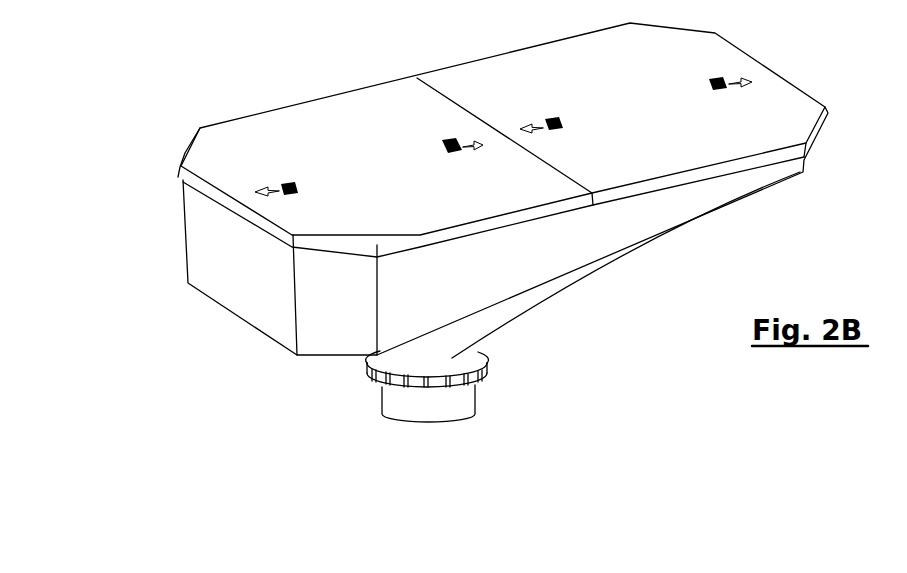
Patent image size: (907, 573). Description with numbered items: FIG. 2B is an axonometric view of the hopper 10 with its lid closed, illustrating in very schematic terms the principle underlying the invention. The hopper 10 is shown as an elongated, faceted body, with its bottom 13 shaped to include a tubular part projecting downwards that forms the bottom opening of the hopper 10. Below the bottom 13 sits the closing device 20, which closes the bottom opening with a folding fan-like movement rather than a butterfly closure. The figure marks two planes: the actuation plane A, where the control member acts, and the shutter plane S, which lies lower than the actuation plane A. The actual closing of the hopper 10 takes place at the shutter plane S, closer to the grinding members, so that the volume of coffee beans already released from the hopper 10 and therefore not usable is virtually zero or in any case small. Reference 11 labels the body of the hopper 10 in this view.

The hopper 10 is at (502, 216).
The plate body 11 is at (707, 195).
The bottom 13 is at (480, 353).
The closing device 20 is at (492, 398).
The actuation plane A is at (370, 372).
The shutter plane S is at (377, 410).